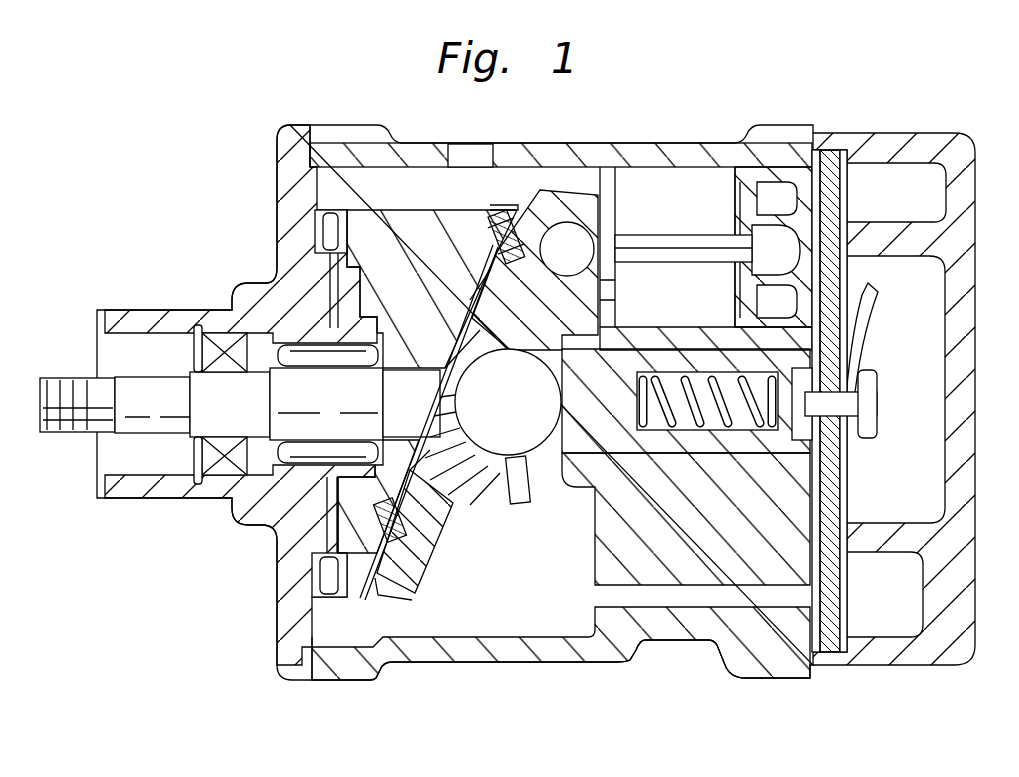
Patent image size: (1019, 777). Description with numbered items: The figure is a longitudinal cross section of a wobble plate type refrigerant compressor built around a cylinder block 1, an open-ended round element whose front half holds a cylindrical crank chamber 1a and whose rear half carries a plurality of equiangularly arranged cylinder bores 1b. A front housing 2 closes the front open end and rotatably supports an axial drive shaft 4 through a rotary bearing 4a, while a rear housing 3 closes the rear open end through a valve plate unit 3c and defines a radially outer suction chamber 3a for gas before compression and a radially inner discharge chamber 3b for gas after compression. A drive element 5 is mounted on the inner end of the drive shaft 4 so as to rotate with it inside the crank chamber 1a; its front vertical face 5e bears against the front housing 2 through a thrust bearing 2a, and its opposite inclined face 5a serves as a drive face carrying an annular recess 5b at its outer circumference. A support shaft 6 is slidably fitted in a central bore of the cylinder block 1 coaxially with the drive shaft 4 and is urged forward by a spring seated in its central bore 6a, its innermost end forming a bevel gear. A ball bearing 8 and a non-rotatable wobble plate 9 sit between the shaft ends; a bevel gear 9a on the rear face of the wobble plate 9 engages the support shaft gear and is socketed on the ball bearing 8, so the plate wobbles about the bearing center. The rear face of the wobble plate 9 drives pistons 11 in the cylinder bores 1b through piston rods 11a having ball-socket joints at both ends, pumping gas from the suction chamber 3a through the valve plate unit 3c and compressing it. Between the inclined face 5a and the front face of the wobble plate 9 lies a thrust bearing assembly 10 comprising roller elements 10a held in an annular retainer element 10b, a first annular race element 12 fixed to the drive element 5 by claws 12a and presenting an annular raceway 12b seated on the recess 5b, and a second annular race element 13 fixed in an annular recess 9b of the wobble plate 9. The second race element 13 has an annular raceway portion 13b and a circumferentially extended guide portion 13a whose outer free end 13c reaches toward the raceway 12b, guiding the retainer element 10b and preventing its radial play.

The cylinder block 1 is at (640, 152).
The crank chamber 1a is at (536, 594).
The cylinder bores 1b is at (606, 160).
The front housing 2 is at (287, 182).
The thrust bearing 2a is at (322, 232).
The rear housing 3 is at (975, 180).
The suction chamber 3a is at (880, 201).
The discharge chamber 3b is at (895, 351).
The valve plate unit 3c is at (826, 655).
The drive shaft 4 is at (40, 382).
The rotary bearing 4a is at (297, 455).
The drive element 5 is at (384, 216).
The inclined face 5a is at (485, 318).
The annular recess 5b is at (485, 274).
The front vertical face 5e is at (336, 512).
The support shaft 6 is at (632, 452).
The central bore 6a is at (715, 440).
The ball bearing 8 is at (495, 442).
The wobble plate 9 is at (432, 540).
The bevel gear 9a is at (450, 472).
The annular recess 9b is at (378, 585).
The thrust bearing assembly 10 is at (529, 205).
The roller elements 10a is at (598, 285).
The annular retainer element 10b is at (388, 568).
The pistons 11 is at (717, 168).
The piston rods 11a is at (672, 238).
The first annular race element 12 is at (313, 573).
The claws 12a is at (505, 180).
The annular raceway 12b is at (492, 222).
The second annular race element 13 is at (598, 313).
The guide portion 13a is at (520, 358).
The annular raceway portion 13b is at (562, 163).
The outer free end 13c is at (490, 252).